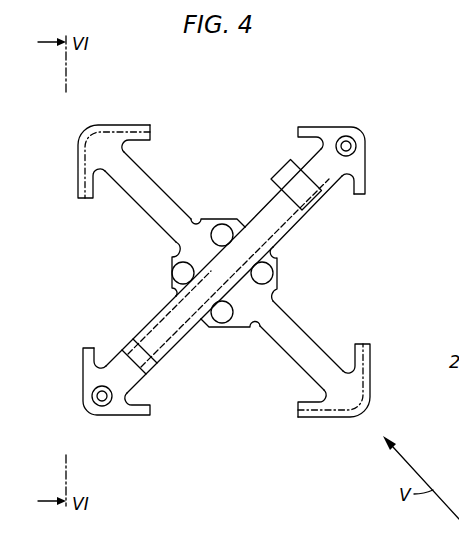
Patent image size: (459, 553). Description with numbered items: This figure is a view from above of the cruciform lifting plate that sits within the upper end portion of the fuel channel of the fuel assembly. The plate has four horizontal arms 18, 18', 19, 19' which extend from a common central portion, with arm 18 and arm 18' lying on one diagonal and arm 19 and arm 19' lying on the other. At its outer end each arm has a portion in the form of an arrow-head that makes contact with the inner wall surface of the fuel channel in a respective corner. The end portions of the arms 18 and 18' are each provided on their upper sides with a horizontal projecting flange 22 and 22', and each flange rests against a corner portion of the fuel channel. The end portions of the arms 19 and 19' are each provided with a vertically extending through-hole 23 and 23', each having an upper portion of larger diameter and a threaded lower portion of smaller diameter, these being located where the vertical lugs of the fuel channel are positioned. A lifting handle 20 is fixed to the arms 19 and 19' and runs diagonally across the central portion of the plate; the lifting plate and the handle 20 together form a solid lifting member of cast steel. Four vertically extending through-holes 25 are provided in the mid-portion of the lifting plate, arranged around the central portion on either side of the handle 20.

The horizontal arm 18 is at (320, 345).
The horizontal arm 18' is at (152, 197).
The horizontal arm 19 is at (153, 353).
The horizontal arm 19' is at (300, 198).
The lifting handle 20 is at (197, 302).
The horizontal projecting flange 22 is at (334, 405).
The horizontal projecting flange 22' is at (114, 142).
The vertically extending through-hole 23 is at (116, 407).
The vertically extending through-hole 23' is at (339, 143).
The vertically extending through-holes 25 is at (226, 310).